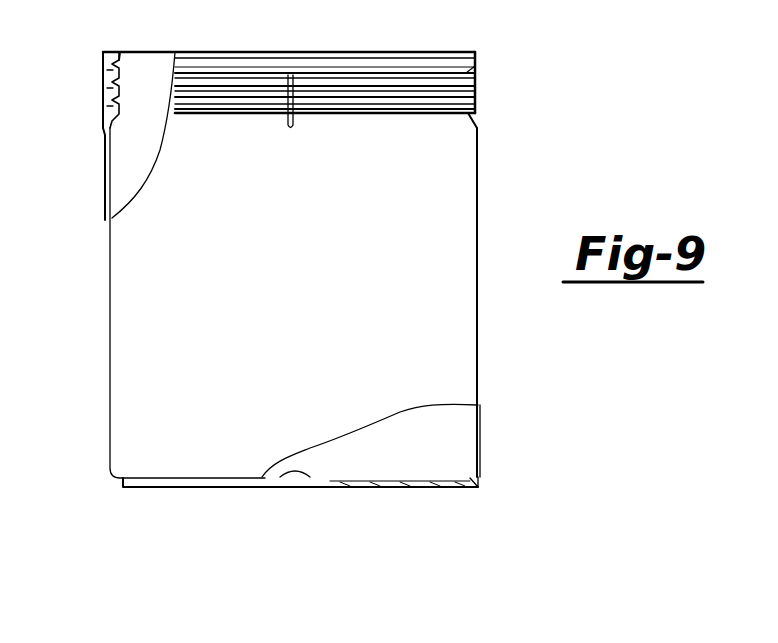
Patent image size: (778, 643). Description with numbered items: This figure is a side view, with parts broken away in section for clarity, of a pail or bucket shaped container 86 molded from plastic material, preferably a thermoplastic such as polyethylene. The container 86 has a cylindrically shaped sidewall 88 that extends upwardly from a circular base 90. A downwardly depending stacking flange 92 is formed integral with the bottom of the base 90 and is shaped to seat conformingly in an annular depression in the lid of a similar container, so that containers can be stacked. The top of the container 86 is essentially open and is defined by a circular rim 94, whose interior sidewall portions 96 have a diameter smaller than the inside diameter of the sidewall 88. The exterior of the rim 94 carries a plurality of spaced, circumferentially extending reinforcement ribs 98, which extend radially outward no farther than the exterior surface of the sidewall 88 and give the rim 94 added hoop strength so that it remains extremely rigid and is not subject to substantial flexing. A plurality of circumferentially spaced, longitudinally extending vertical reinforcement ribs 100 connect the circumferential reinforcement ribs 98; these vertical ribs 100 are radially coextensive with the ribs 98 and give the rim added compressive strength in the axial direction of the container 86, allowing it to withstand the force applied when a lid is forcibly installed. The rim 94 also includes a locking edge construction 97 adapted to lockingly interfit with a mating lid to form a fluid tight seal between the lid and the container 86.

The container 86 is at (497, 73).
The sidewall 88 is at (458, 205).
The base 90 is at (372, 480).
The stacking flange 92 is at (477, 481).
The rim 94 is at (93, 82).
The interior sidewall portions 96 is at (121, 92).
The locking edge construction 97 is at (108, 52).
The circumferential reinforcement ribs 98 is at (408, 85).
The vertical reinforcement ribs 100 is at (292, 128).